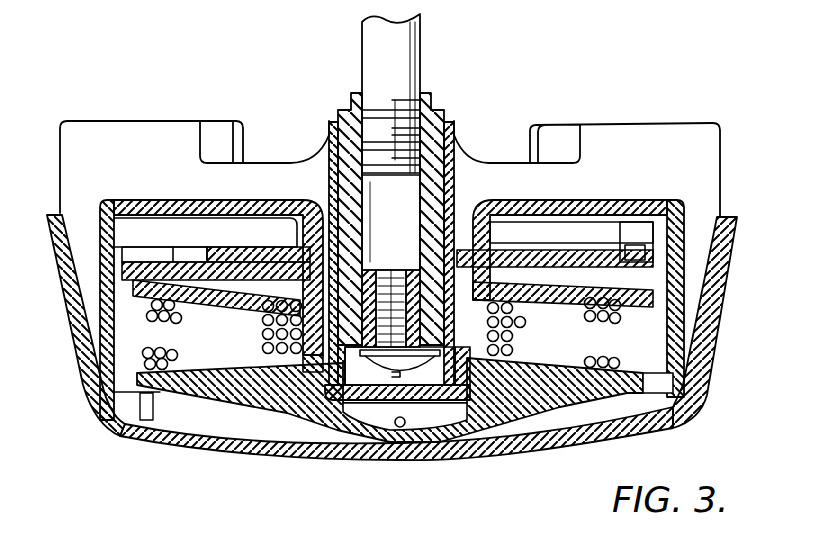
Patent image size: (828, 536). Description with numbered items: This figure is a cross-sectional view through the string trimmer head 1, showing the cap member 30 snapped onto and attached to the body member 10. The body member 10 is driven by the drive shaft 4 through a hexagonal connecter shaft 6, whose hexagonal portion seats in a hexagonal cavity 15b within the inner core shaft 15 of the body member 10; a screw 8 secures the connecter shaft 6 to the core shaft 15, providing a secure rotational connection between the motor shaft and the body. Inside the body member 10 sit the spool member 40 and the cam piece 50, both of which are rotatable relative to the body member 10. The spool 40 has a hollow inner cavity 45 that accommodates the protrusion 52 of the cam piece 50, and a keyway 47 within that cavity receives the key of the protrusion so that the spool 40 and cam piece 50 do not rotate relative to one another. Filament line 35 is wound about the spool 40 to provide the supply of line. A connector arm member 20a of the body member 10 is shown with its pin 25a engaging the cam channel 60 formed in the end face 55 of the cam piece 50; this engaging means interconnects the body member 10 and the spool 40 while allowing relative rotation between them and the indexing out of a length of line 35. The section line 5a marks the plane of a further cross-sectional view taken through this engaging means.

The string trimmer head 1 is at (743, 326).
The drive shaft 4 is at (408, 58).
The hexagonal connecter shaft 6 is at (431, 98).
The screw 8 is at (387, 293).
The body member 10 is at (54, 290).
The inner core shaft 15 is at (338, 357).
The hexagonal cavity 15b is at (433, 163).
The connector arm member 20a is at (588, 233).
The pin 25a is at (629, 253).
The cap member 30 is at (177, 447).
The filament line 35 is at (500, 340).
The spool member 40 is at (628, 372).
The hollow inner cavity 45 is at (399, 427).
The keyway 47 is at (300, 386).
The cam piece 50 is at (281, 345).
The protrusion 52 is at (423, 400).
The end face 55 is at (282, 237).
The cam channel 60 is at (192, 247).
The section line 5a- 5a is at (92, 244).